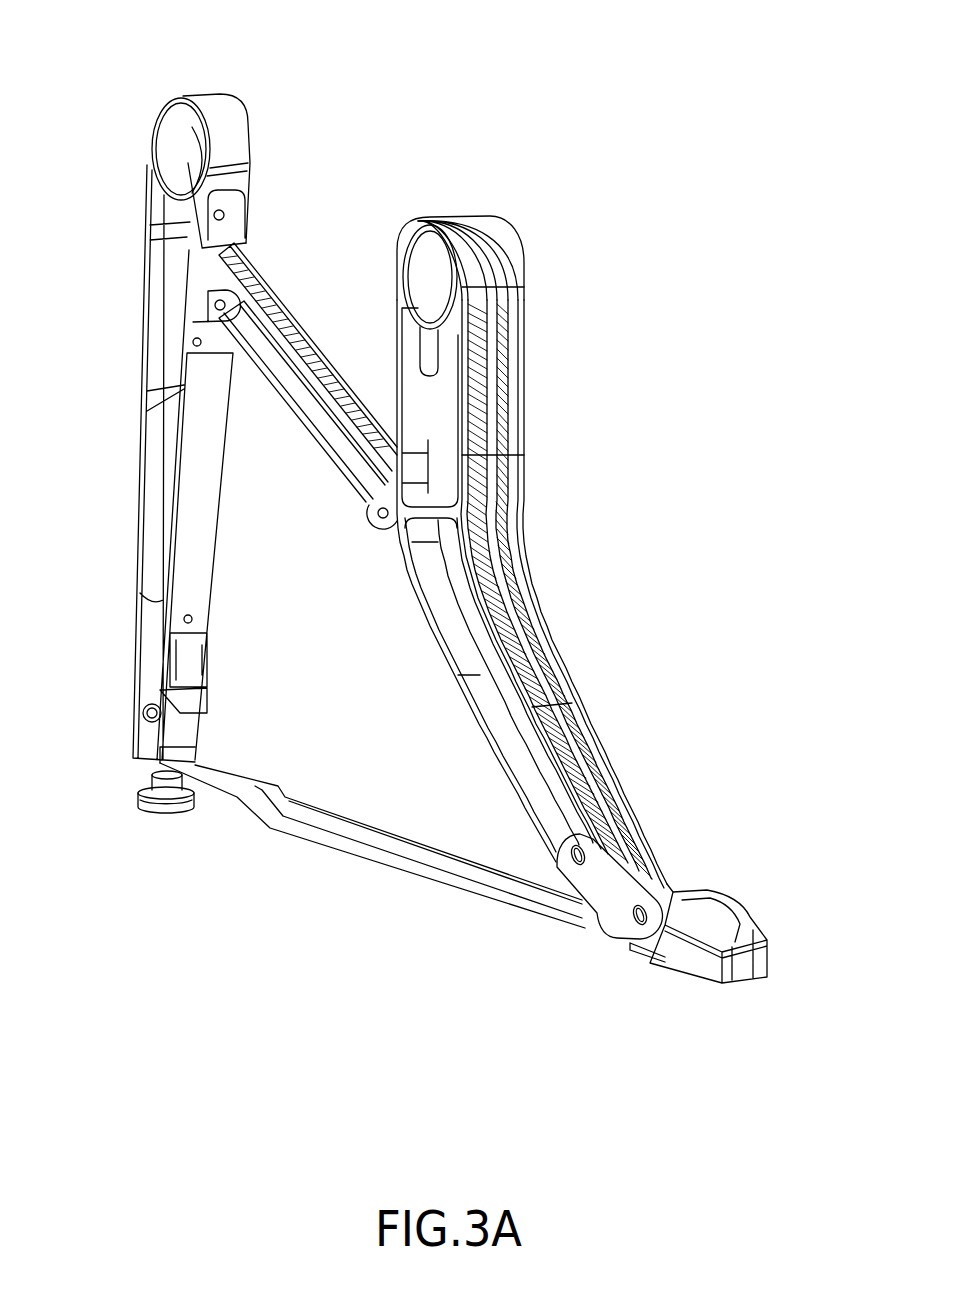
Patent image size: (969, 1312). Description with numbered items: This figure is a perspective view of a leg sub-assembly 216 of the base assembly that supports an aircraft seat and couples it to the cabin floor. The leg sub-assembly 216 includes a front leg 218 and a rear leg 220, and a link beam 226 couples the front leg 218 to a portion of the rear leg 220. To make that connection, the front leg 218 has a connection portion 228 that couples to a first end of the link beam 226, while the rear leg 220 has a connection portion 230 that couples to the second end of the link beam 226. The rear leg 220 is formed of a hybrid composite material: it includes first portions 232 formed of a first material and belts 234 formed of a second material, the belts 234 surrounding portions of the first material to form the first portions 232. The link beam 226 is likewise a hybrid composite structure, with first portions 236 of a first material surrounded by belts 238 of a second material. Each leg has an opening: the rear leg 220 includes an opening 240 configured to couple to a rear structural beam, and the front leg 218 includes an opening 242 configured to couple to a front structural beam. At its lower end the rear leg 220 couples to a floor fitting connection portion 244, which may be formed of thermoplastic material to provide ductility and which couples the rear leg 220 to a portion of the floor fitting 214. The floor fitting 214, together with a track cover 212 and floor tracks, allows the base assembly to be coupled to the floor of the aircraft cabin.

The track cover 212 is at (268, 850).
The floor fitting 214 is at (775, 920).
The leg sub-assembly 216 is at (79, 30).
The front leg 218 is at (142, 453).
The rear leg 220 is at (537, 528).
The link beam 226 is at (308, 391).
The connection portion 228 is at (213, 303).
The connection portion 230 is at (383, 533).
The first portion 232 is at (518, 335).
The belt 234 is at (490, 232).
The first portion 236 is at (300, 358).
The belt 238 is at (277, 313).
The opening 240 is at (427, 252).
The opening 242 is at (170, 138).
The floor fitting connection portion 244 is at (618, 896).